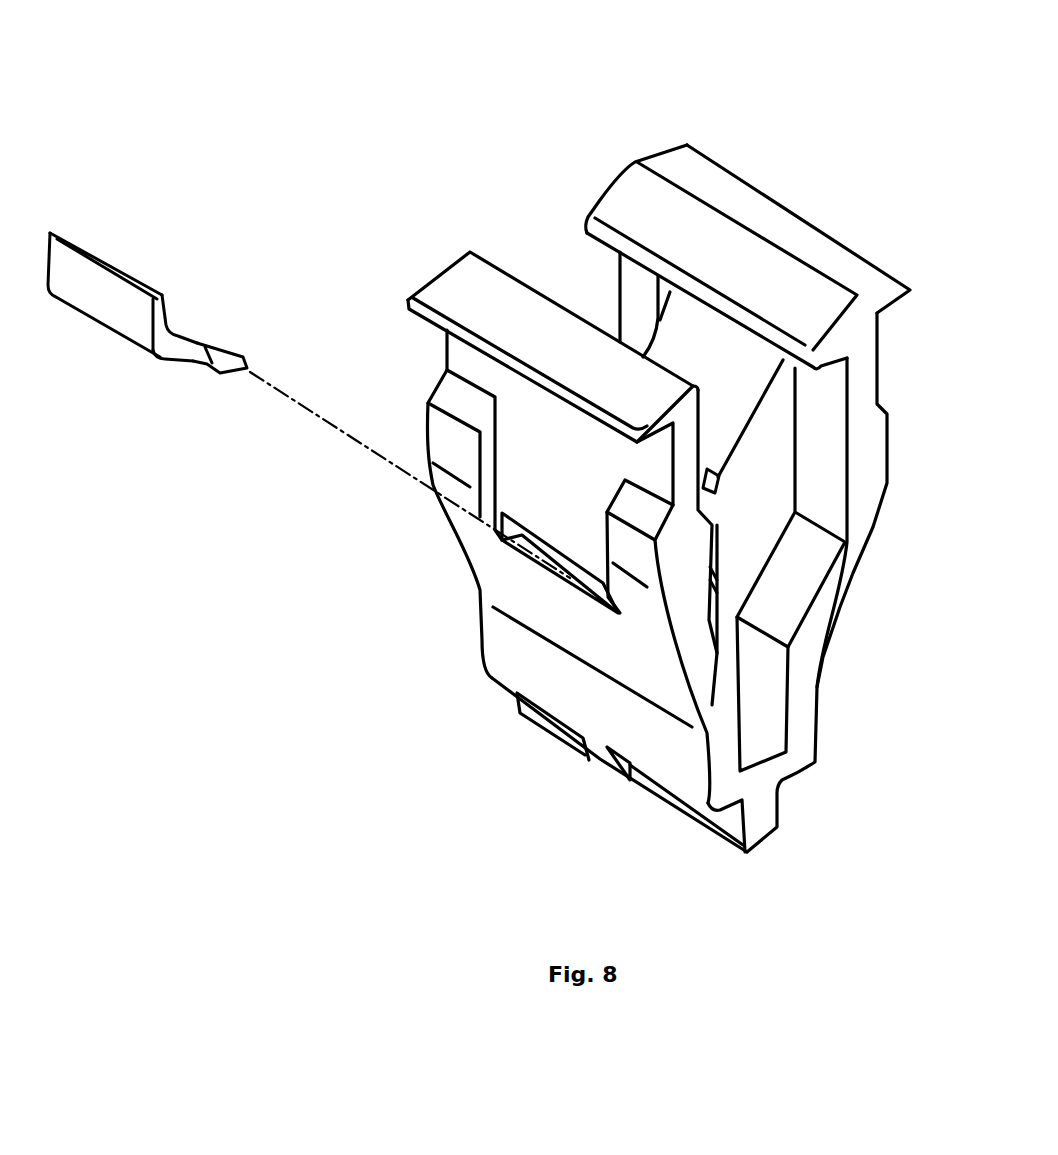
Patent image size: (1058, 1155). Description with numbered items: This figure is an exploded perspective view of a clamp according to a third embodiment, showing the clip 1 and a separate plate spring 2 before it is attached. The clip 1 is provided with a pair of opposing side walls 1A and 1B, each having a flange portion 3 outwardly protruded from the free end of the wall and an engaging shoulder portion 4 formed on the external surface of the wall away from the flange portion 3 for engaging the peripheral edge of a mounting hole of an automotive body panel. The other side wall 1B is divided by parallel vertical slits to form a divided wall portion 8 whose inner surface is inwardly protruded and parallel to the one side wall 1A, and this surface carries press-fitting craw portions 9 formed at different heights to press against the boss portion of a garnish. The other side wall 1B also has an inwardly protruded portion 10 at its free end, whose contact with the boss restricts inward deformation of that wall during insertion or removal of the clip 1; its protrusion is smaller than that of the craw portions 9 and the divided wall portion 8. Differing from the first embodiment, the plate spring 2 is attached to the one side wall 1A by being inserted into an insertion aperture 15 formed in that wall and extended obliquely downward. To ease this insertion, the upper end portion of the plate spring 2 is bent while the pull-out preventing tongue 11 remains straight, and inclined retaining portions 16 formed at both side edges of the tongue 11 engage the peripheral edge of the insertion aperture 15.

The clip 1 is at (780, 147).
The one side wall 1A is at (500, 577).
The other side wall 1B is at (817, 687).
The plate spring 2 is at (98, 213).
The flange portion 3 is at (435, 293).
The engaging shoulder portion 4 is at (453, 397).
The divided wall portion 8 is at (733, 402).
The press-fitting craw portion 9 is at (720, 490).
The inwardly protruded portion 10 is at (593, 233).
The pull-out preventing tongue 11 is at (182, 330).
The insertion aperture 15 is at (574, 572).
The inclined retaining portion 16 is at (216, 360).